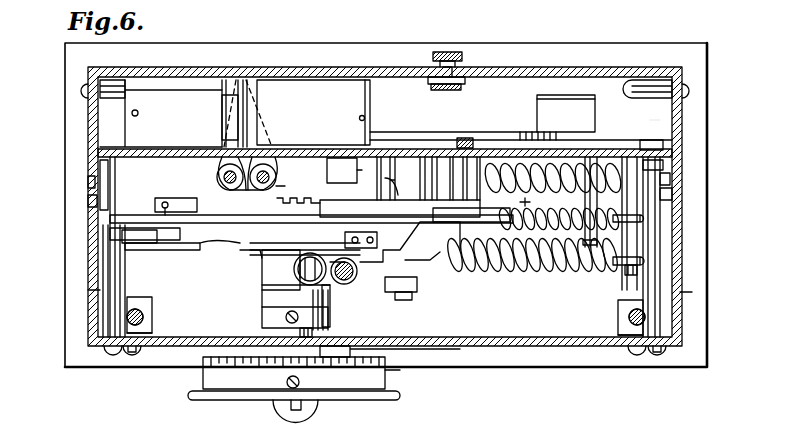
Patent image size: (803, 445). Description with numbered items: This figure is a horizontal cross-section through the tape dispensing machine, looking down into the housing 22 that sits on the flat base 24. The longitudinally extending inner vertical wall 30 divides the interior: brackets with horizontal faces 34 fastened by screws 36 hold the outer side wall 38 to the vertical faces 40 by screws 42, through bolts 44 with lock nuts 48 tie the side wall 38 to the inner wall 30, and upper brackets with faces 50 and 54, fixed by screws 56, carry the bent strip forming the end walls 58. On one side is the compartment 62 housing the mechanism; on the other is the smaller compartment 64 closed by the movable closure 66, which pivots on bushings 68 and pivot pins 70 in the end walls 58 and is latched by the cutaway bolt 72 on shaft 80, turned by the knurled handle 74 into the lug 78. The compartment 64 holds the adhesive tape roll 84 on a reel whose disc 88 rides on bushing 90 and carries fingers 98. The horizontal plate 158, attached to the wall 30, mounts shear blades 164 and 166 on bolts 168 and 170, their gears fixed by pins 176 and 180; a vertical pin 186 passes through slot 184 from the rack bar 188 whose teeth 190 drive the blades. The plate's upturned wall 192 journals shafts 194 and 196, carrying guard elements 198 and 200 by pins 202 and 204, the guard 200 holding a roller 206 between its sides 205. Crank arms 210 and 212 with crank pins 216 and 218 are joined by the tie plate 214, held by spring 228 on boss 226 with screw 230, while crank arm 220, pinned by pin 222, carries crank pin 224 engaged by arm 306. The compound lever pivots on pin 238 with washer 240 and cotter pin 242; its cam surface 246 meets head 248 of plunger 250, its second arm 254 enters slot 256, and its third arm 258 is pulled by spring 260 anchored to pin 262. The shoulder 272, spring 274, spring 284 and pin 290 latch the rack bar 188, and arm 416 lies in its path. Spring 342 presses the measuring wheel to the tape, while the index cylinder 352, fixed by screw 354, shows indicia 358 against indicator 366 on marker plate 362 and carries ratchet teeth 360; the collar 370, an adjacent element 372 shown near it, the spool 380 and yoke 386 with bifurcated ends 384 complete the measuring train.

The housing 22 is at (690, 250).
The base 24 is at (615, 58).
The inner vertical wall 30 is at (178, 158).
The horizontal bracket faces 34 is at (148, 297).
The screws 36 is at (146, 315).
The outer vertical side wall 38 is at (470, 349).
The vertical bracket faces 40 is at (150, 330).
The screws 42 is at (140, 358).
The through bolts 44 is at (105, 360).
The lock nuts 48 is at (641, 146).
The bracket face 50 is at (677, 163).
The bracket faces 54 is at (683, 192).
The screws 56 is at (687, 174).
The end walls 58 is at (692, 291).
The compartment 62 is at (527, 330).
The second compartment 64 is at (652, 122).
The movable closure 66 is at (328, 68).
The bushings 68 is at (120, 88).
The pivot pins 70 is at (84, 90).
The cutaway bolt 72 is at (466, 87).
The knurled operating handle 74 is at (438, 52).
The lug 78 is at (430, 76).
The rotatable shaft 80 is at (462, 73).
The roll of pressure-sensitive adhesive tape 84 is at (594, 111).
The circular disc 88 is at (556, 136).
The bushing 90 is at (438, 140).
The projecting fingers 98 is at (555, 132).
The horizontal plate 158 is at (130, 150).
The shear blade 164 is at (278, 162).
The shear blade 166 is at (220, 160).
The bolt 168 is at (278, 186).
The bolt 170 is at (225, 190).
The pin 176 is at (277, 177).
The pin 180 is at (217, 177).
The elongated through slot 184 is at (150, 192).
The vertical pin 186 is at (166, 212).
The rack bar 188 is at (216, 212).
The teeth 190 is at (280, 204).
The vertical wall 192 is at (300, 227).
The shaft 194 is at (366, 207).
The shaft 196 is at (108, 210).
The guard element 198 is at (290, 97).
The guard element 200 is at (183, 87).
The pin 202 is at (358, 118).
The pin 204 is at (139, 113).
The projecting sides 205 is at (222, 140).
The roller 206 is at (240, 80).
The crank arm 210 is at (357, 220).
The crank arm 212 is at (110, 243).
The curved tie plate 214 is at (130, 255).
The crank pin 216 is at (348, 236).
The crank pin 218 is at (139, 260).
The downwardly projecting crank arm 220 is at (352, 165).
The pin 222 is at (346, 176).
The crank pin 224 is at (378, 180).
The boss 226 is at (240, 258).
The spring 228 is at (217, 258).
The screw 230 is at (245, 265).
The pin 238 is at (440, 300).
The washer 240 is at (372, 278).
The cotter pin 242 is at (404, 300).
The curved cam surface 246 is at (331, 315).
The head 248 is at (344, 280).
The plunger 250 is at (320, 295).
The second arm 254 is at (418, 250).
The elongated slot 256 is at (480, 208).
The third arm 258 is at (428, 270).
The tension spring 260 is at (480, 268).
The pin 262 is at (623, 273).
The shouldered portion 272 is at (651, 247).
The tension spring 274 is at (592, 237).
The tension spring 284 is at (574, 273).
The pin 290 is at (591, 203).
The arm 306 is at (395, 190).
The tension spring 342 is at (516, 132).
The index cylinder 352 is at (218, 395).
The machine screw 354 is at (283, 420).
The indicia 358 is at (384, 378).
The ratchet teeth 360 is at (313, 332).
The marker plate 362 is at (273, 360).
The indicator 366 is at (300, 382).
The collar 370 is at (260, 316).
The screw 372 is at (283, 318).
The spool 380 is at (267, 295).
The bifurcated ends 384 is at (303, 275).
The yoke 386 is at (281, 270).
The upwardly extending arm 416 is at (530, 202).